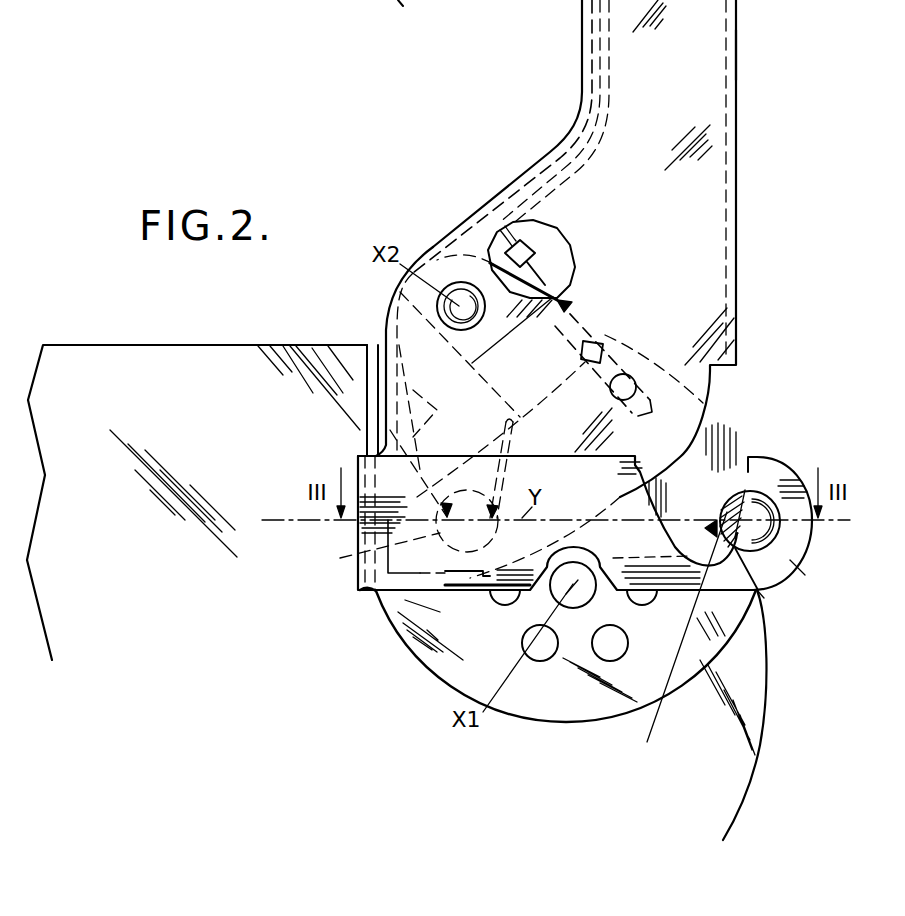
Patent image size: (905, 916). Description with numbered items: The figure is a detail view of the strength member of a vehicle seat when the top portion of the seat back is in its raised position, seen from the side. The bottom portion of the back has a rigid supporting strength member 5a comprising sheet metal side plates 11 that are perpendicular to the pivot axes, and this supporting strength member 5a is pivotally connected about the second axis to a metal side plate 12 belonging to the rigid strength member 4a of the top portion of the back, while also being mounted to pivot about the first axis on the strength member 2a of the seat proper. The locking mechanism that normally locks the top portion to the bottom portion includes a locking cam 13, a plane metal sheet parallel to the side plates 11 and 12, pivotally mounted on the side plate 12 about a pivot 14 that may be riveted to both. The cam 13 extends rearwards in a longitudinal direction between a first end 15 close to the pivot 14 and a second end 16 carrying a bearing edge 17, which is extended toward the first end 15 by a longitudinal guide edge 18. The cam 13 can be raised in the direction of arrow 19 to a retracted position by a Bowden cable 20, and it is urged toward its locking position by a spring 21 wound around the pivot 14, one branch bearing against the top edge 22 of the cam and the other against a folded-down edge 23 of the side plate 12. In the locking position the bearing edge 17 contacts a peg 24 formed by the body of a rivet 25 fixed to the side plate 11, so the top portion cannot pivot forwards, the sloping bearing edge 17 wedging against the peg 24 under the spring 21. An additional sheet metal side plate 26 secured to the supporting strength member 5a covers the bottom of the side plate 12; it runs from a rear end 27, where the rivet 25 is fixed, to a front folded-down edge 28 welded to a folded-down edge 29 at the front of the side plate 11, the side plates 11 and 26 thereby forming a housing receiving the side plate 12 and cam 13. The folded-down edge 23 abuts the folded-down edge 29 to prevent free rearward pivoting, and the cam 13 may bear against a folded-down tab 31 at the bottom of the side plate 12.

The strength member of the seat proper 2a is at (114, 378).
The rigid strength member of the top portion of the back 4a is at (737, 53).
The supporting strength member 5a is at (731, 647).
The side plate 11 is at (690, 652).
The side plate 12 is at (694, 93).
The locking cam 13 is at (701, 430).
The pivot 14 is at (356, 558).
The first end 15 is at (318, 546).
The second end 16 is at (697, 487).
The bearing edge 17 is at (758, 597).
The longitudinal guide edge 18 is at (677, 641).
The arrow 19 is at (494, 367).
The Bowden cable 20 is at (497, 232).
The spring 21 is at (372, 373).
The top edge 22 is at (398, 292).
The folded-down edge 23 is at (582, 112).
The peg 24 is at (727, 512).
The rivet 25 is at (762, 530).
The additional sheet metal side plate 26 is at (497, 577).
The rear end 27 is at (762, 568).
The folded-down edge 28 is at (357, 570).
The folded-down edge 29 is at (372, 373).
The folded-down tab 31 is at (432, 596).